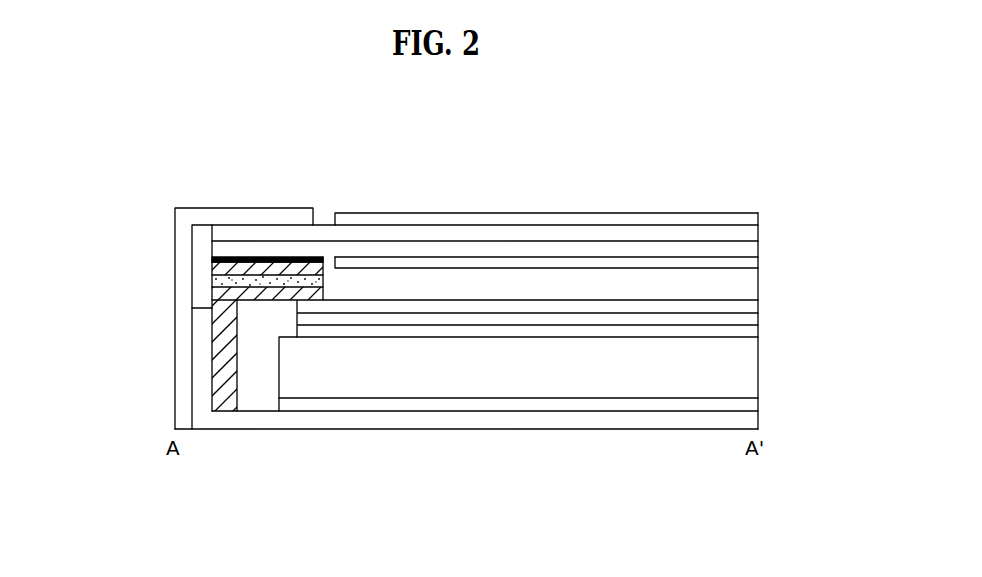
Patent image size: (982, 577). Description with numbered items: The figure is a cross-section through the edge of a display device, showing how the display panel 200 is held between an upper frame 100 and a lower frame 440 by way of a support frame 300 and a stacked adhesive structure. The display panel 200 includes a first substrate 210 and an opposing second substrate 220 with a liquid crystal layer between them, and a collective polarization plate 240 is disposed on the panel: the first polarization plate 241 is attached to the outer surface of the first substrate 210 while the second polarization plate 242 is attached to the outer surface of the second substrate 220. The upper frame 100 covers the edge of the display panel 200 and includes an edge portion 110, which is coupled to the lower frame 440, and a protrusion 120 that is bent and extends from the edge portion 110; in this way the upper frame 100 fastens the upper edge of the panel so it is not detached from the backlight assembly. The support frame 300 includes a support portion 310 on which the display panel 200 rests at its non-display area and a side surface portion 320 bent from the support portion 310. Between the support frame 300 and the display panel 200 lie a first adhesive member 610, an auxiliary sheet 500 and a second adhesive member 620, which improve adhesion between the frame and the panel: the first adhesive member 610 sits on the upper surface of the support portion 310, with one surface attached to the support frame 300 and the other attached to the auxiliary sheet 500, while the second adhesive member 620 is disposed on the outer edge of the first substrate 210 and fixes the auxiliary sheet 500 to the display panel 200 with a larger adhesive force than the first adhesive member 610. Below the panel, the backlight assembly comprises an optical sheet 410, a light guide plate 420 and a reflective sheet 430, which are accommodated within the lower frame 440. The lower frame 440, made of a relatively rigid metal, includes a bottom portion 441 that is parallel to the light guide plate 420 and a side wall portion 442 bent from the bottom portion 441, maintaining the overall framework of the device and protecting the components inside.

The upper frame 100 is at (403, 305).
The edge portion 110 is at (188, 241).
The protrusion 120 is at (220, 214).
The display panel 200 is at (485, 186).
The first substrate 210 is at (485, 250).
The second substrate 220 is at (410, 235).
The polarization plate 240 is at (546, 192).
The first polarization plate 241 is at (661, 264).
The second polarization plate 242 is at (587, 222).
The support frame 300 is at (275, 335).
The support portion 310 is at (262, 292).
The side surface portion 320 is at (227, 370).
The optical sheet 410 is at (761, 300).
The light guide plate 420 is at (745, 366).
The reflective sheet 430 is at (745, 406).
The lower frame 440 is at (466, 422).
The bottom portion 441 is at (203, 490).
The side wall portion 442 is at (200, 392).
The auxiliary sheet 500 is at (275, 293).
The first adhesive member 610 is at (225, 280).
The second adhesive member 620 is at (212, 258).